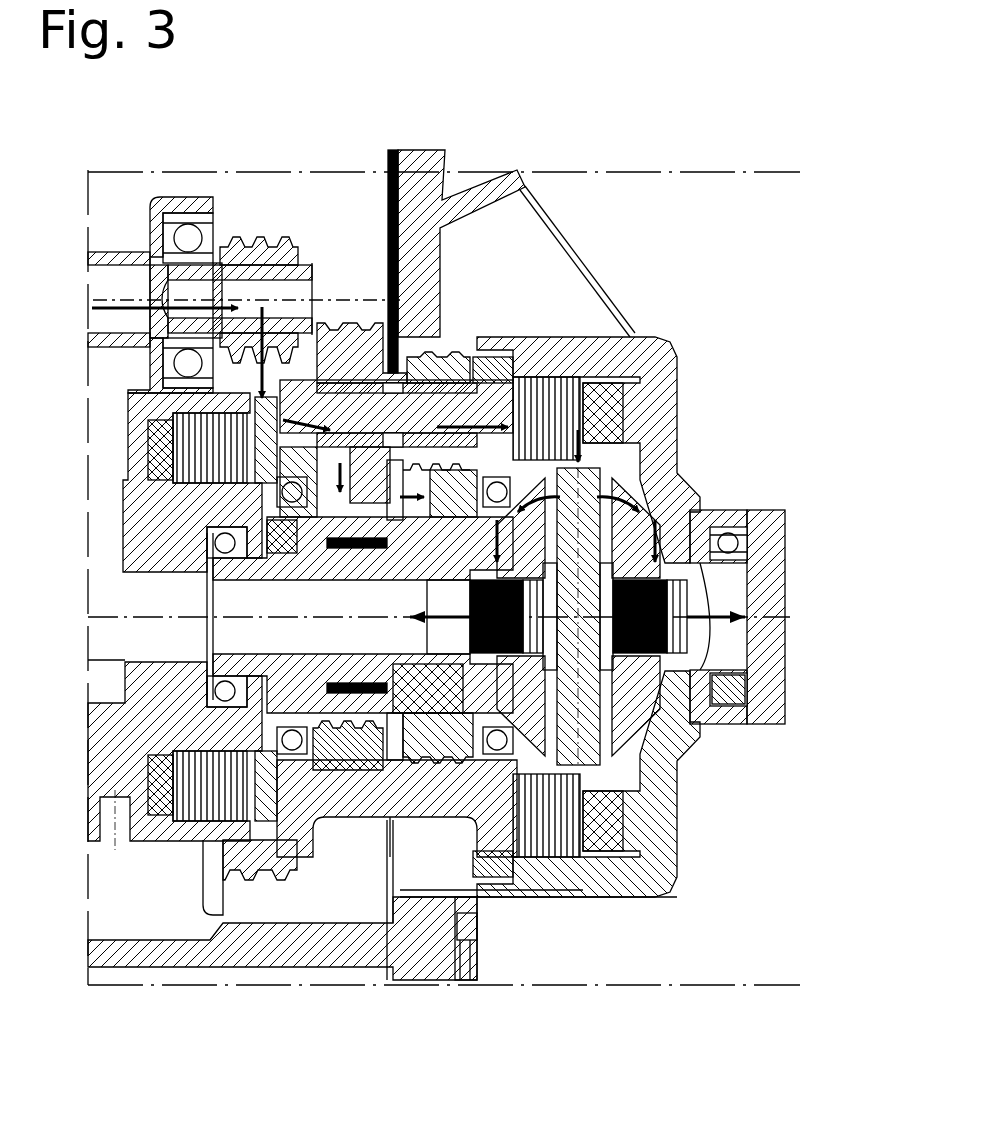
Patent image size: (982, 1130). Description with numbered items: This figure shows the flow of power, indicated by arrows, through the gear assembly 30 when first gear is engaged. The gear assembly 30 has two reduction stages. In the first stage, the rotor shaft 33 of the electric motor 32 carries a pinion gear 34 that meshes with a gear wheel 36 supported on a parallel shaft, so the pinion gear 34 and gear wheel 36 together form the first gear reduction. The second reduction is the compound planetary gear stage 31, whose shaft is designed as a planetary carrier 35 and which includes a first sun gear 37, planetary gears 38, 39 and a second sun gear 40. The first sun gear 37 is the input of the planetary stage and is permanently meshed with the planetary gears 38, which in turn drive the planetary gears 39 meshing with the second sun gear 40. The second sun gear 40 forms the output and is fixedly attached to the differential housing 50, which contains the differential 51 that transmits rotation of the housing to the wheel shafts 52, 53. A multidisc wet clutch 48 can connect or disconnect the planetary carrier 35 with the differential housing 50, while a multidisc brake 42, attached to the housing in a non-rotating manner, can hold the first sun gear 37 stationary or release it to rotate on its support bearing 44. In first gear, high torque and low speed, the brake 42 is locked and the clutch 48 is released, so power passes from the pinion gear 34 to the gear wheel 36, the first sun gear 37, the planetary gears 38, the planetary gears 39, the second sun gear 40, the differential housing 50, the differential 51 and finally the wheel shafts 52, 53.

The gear assembly 30 is at (716, 148).
The compound planetary gear stage 31 is at (432, 402).
The electric motor 32 is at (120, 190).
The rotor shaft 33 is at (358, 323).
The pinion gear 34 is at (258, 233).
The planetary carrier 35 is at (443, 337).
The gear wheel 36 is at (187, 358).
The first sun gear 37 is at (265, 490).
The planetary gears 38 is at (360, 283).
The planetary gears 39 is at (470, 365).
The second sun gear 40 is at (437, 507).
The multidisc brake 42 is at (173, 417).
The support bearing 44 is at (212, 537).
The multidisc wet clutch 48 is at (663, 378).
The differential housing 50 is at (668, 497).
The differential 51 is at (723, 702).
The wheel shaft 52 is at (743, 628).
The wheel shaft 53 is at (100, 655).